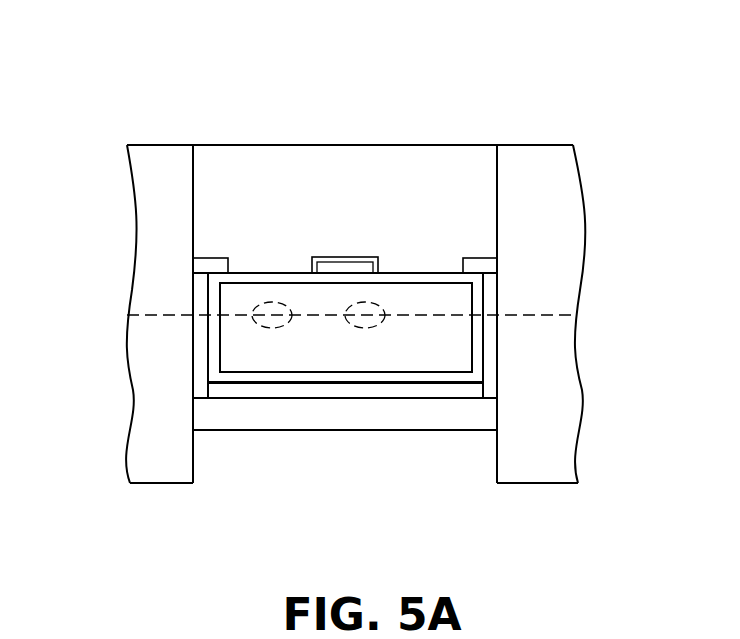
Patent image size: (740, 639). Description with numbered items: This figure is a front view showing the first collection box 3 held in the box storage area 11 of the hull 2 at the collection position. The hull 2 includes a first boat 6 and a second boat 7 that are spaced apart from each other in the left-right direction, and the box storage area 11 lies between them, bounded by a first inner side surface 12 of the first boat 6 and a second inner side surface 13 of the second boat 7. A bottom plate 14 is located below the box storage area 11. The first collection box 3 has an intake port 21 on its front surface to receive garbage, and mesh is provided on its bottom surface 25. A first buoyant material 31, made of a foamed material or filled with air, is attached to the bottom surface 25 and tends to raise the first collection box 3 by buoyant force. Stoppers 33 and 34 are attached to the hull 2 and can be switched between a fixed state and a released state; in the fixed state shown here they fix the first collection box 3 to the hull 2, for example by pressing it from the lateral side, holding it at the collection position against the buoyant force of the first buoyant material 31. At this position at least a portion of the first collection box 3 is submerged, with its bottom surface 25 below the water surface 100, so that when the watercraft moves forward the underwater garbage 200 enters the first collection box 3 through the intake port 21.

The hull 2 is at (120, 108).
The first collection box 3 is at (415, 273).
The first boat 6 is at (540, 188).
The second boat 7 is at (150, 189).
The box storage area 11 is at (342, 218).
The first inner side surface 12 is at (497, 203).
The second inner side surface 13 is at (193, 203).
The bottom plate 14 is at (258, 423).
The intake port 21 is at (368, 374).
The bottom surface 25 is at (415, 385).
The first buoyant material 31 is at (453, 395).
The stopper 33 is at (497, 268).
The stopper 34 is at (193, 270).
The water surface 100 is at (318, 312).
The underwater garbage 200 is at (282, 328).